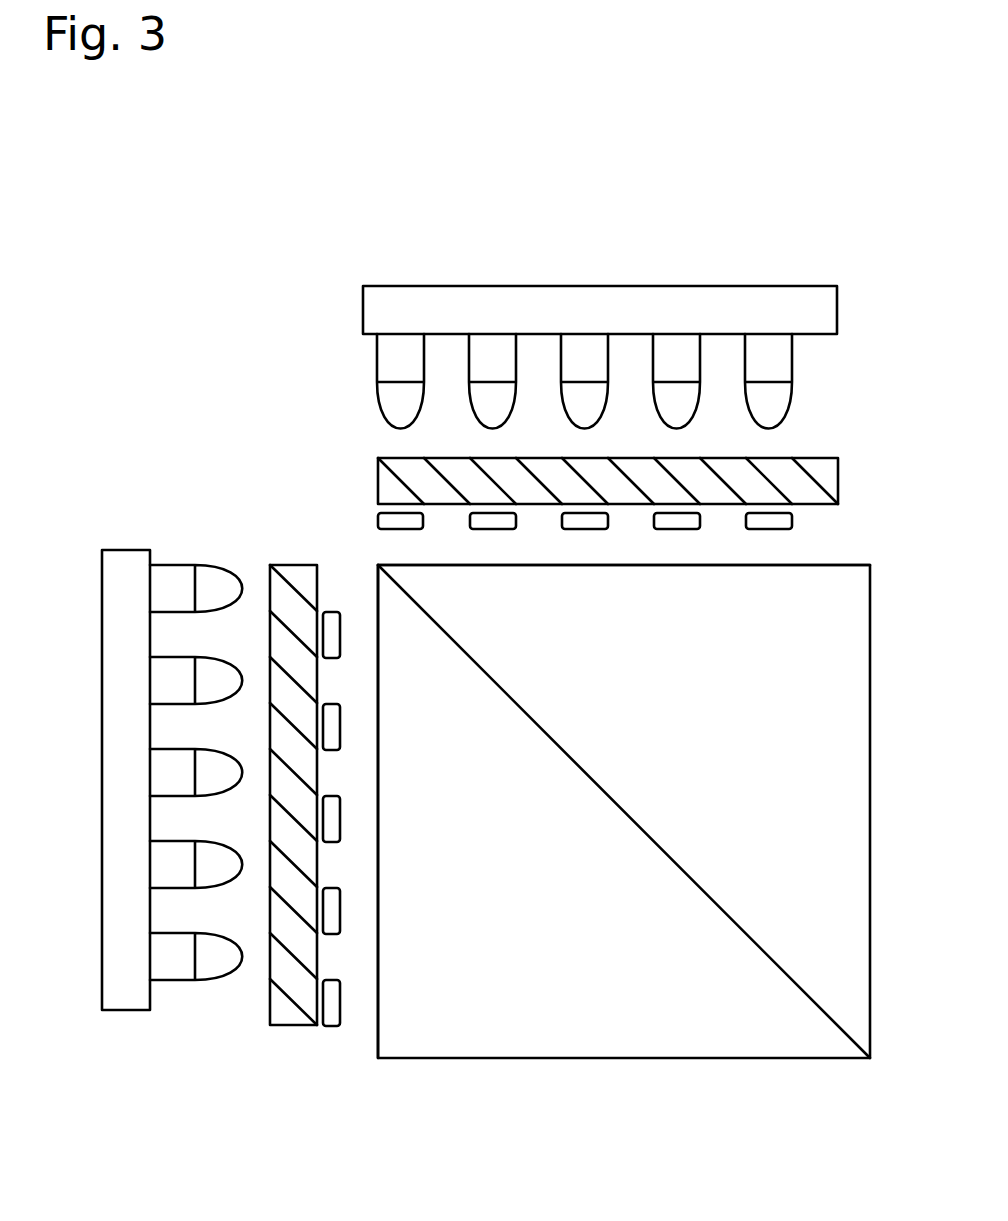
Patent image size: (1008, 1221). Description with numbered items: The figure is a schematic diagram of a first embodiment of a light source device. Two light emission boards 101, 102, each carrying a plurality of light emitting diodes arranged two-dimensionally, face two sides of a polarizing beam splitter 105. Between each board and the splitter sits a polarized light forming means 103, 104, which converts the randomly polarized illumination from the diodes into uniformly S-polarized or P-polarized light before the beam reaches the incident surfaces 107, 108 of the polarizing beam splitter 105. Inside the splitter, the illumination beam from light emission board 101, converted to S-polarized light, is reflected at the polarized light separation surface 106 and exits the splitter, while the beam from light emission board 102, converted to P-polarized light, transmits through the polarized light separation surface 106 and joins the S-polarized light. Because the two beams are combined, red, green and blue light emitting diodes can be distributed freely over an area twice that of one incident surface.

The light emission board 101 is at (363, 300).
The light emission board 102 is at (130, 1010).
The polarized light forming means 103 is at (378, 468).
The polarized light forming means 104 is at (285, 1025).
The polarizing beam splitter 105 is at (590, 1064).
The polarized light separation surface 106 is at (825, 1013).
The incident surface 107 is at (840, 565).
The incident surface 108 is at (378, 1048).